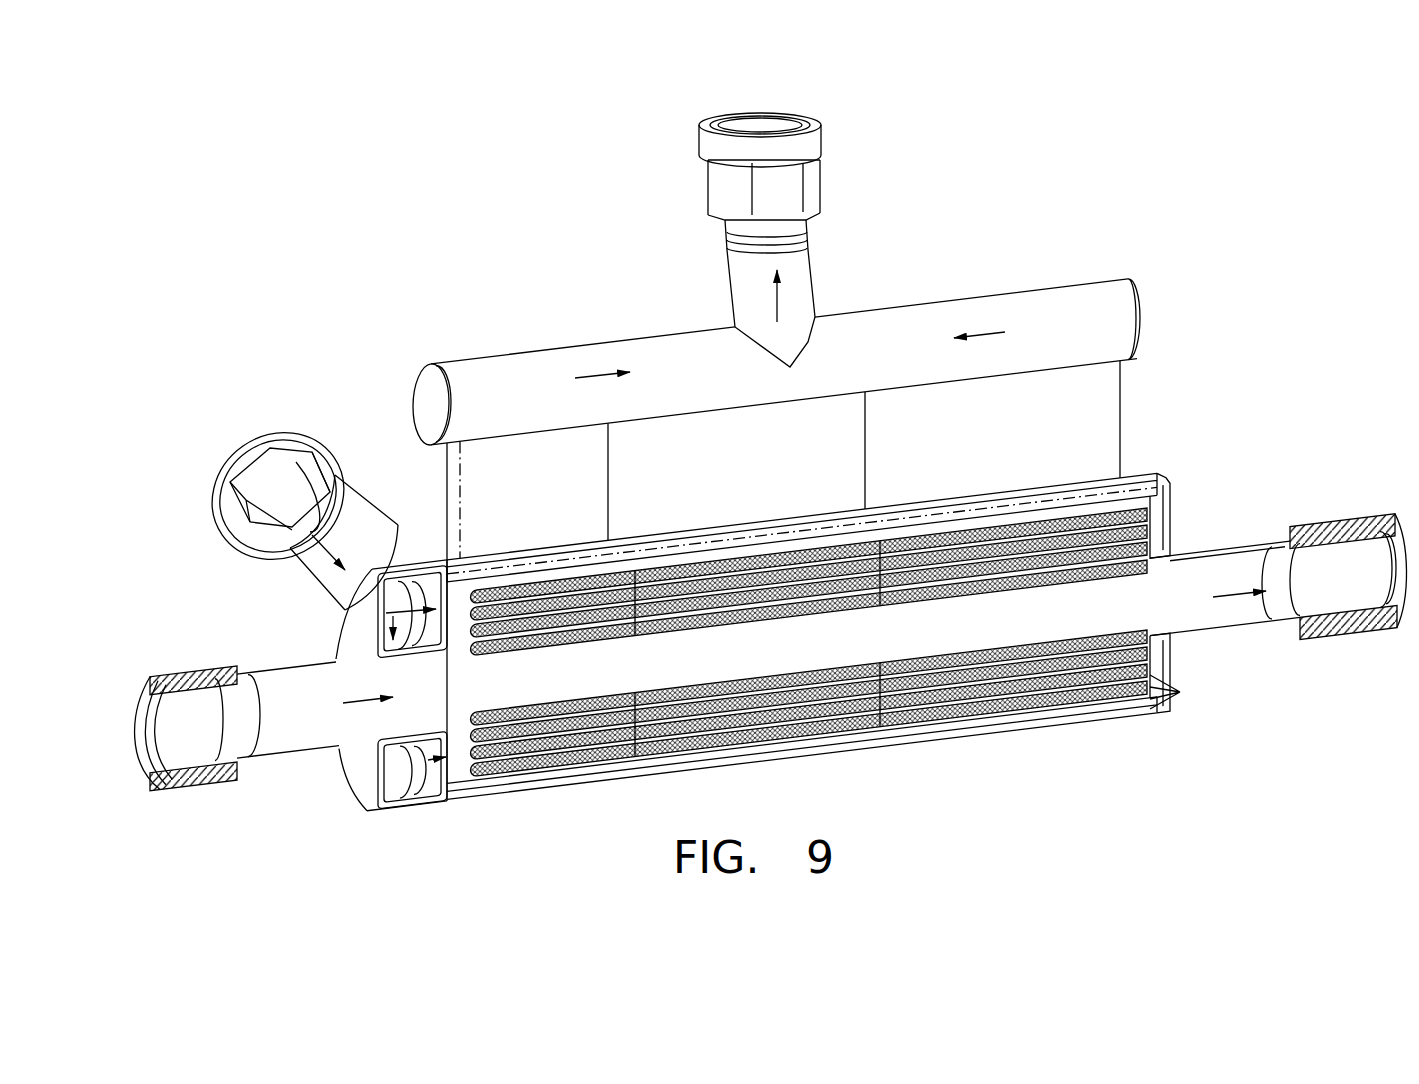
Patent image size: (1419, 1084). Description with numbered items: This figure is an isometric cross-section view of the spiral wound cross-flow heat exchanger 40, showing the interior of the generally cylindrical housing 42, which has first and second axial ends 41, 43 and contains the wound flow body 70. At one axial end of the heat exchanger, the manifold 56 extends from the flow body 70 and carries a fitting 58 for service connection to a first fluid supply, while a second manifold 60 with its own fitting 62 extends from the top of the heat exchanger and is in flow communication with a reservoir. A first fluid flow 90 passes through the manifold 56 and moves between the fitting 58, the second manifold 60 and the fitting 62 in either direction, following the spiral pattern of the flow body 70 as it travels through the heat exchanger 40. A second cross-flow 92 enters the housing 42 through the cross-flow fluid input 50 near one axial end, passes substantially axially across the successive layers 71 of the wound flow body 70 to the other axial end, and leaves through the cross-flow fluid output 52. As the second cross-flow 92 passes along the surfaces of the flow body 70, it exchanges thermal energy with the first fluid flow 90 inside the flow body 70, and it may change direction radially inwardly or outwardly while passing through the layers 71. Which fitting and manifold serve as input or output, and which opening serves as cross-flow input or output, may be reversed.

The spiral wound cross-flow heat exchanger 40 is at (1133, 157).
The first axial end 41 is at (1178, 655).
The housing 42 is at (905, 748).
The second axial end 43 is at (352, 805).
The cross-flow fluid input 50 is at (268, 468).
The cross-flow fluid output 52 is at (1320, 633).
The manifold 56 is at (287, 668).
The fitting 58 is at (219, 797).
The second manifold 60 is at (888, 283).
The fitting 62 is at (808, 138).
The flow body 70 is at (1163, 510).
The layers 71 is at (1184, 693).
The first fluid flow 90 is at (777, 305).
The second cross-flow 92 is at (370, 545).